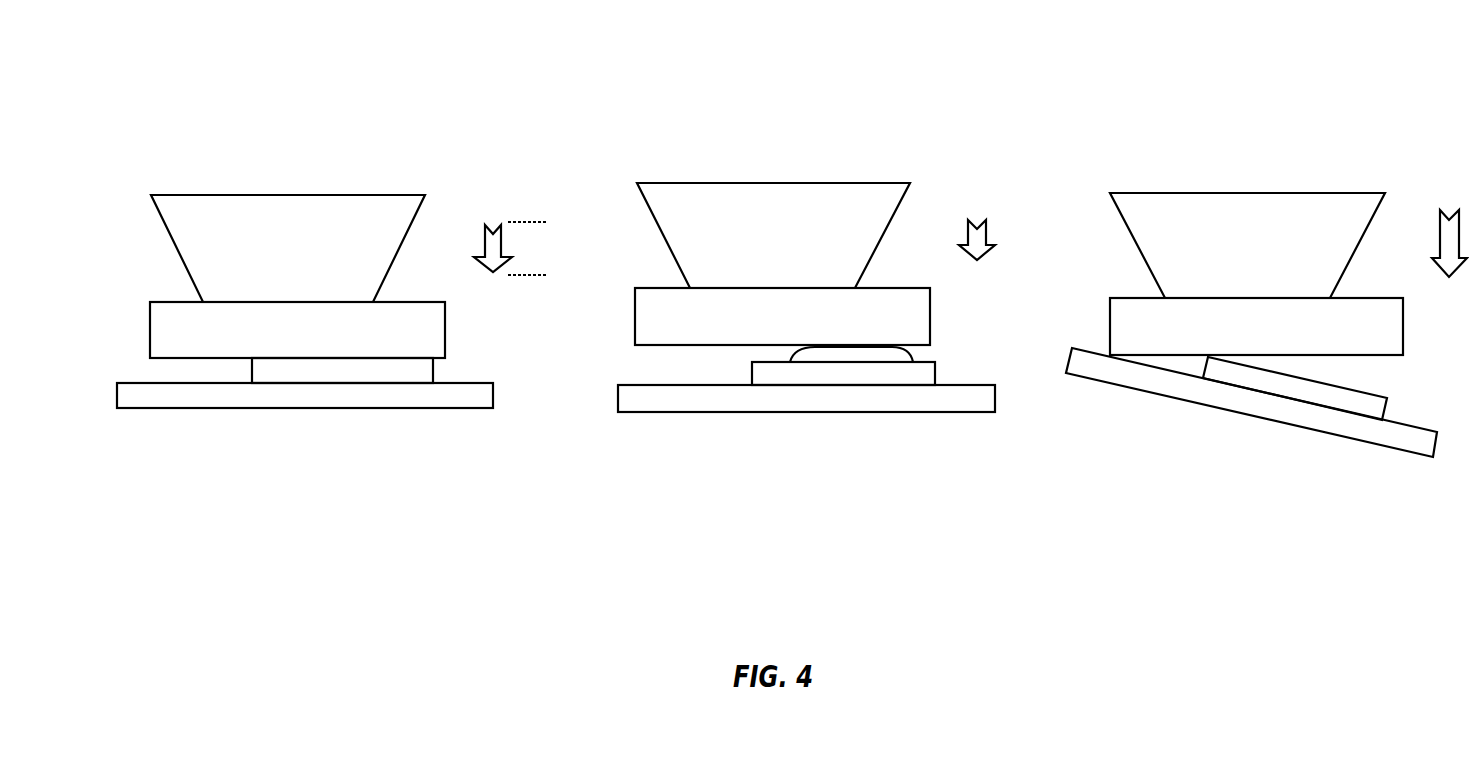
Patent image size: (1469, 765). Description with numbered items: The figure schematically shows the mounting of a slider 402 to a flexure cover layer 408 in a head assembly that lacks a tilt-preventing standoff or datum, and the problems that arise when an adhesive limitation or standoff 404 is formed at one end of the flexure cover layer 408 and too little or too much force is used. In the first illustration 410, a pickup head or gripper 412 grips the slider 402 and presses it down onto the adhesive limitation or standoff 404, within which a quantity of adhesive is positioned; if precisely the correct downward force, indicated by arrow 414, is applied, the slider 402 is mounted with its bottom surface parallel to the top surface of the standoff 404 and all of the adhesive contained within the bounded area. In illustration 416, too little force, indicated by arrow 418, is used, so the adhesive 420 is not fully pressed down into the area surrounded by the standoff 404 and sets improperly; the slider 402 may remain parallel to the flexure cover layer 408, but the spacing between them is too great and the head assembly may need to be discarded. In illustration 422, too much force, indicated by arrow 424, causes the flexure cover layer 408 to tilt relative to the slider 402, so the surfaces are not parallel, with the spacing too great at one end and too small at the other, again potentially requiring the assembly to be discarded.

The slider 402 is at (433, 310).
The adhesive limitation or standoff 404 is at (422, 377).
The flexure cover layer 408 is at (486, 381).
The first illustration 410 is at (223, 129).
The pickup head or gripper 412 is at (180, 253).
The arrow 414 is at (493, 231).
The illustration 416 is at (663, 129).
The arrow 418 is at (977, 227).
The adhesive 420 is at (913, 343).
The illustration 422 is at (1155, 129).
The arrow 424 is at (1448, 219).